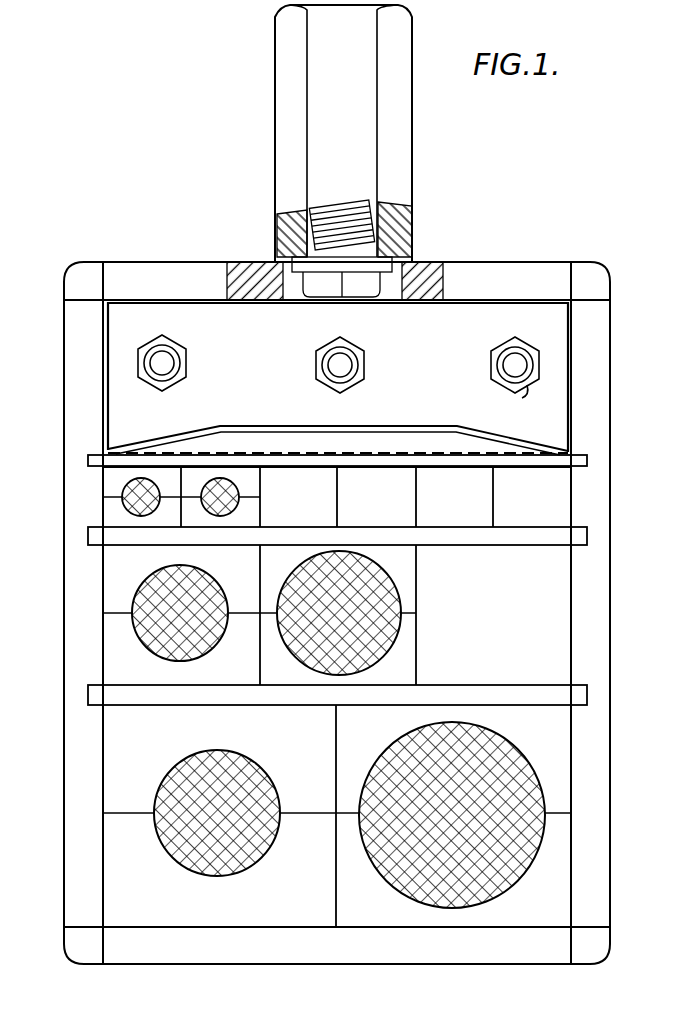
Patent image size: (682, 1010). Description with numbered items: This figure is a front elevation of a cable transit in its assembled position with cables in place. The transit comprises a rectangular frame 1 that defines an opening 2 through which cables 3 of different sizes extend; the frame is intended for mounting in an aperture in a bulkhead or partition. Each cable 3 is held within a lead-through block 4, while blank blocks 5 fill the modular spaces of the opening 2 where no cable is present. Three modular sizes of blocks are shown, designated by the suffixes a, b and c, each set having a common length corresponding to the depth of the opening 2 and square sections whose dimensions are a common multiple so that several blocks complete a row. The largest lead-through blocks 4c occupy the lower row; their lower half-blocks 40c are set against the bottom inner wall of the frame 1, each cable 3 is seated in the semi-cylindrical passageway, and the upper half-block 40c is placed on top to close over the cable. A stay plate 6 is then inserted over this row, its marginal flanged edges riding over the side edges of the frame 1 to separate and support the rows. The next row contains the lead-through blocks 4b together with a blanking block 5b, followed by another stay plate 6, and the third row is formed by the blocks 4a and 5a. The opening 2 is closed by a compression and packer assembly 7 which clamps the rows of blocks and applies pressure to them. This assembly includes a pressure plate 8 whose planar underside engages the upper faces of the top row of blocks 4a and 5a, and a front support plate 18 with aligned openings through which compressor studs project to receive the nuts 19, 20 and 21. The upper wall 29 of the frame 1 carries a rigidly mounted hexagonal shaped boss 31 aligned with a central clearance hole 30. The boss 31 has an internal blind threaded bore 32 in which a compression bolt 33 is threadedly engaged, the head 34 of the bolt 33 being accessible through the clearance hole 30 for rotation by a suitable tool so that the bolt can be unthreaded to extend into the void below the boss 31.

The rectangular frame 1 is at (334, 594).
The opening 2 is at (560, 573).
The cables 3 is at (128, 506).
The lead-through block 4 is at (334, 660).
The lead-through blocks of the smallest modular set 4a is at (336, 461).
The lead-through blocks of the intermediate modular set 4b is at (336, 612).
The lead-through blocks of the largest modular set 4c is at (333, 816).
The blank blocks 5 is at (385, 495).
The blank block of the smallest modular set 5a is at (548, 492).
The blank block of the intermediate modular set 5b is at (540, 660).
The stay plates 6 is at (585, 537).
The compression and packer assembly 7 is at (548, 340).
The pressure plate 8 is at (520, 452).
The front support plate 18 is at (485, 322).
The nut 19 is at (167, 389).
The nut 20 is at (331, 347).
The nut 21 is at (524, 399).
The upper wall 29 is at (452, 275).
The central clearance hole 30 is at (290, 288).
The hexagonal shaped boss 31 is at (290, 92).
The internal blind threaded bore 32 is at (363, 208).
The compression bolt 33 is at (336, 218).
The head of the bolt 34 is at (320, 272).
The half-blocks 40c is at (290, 831).